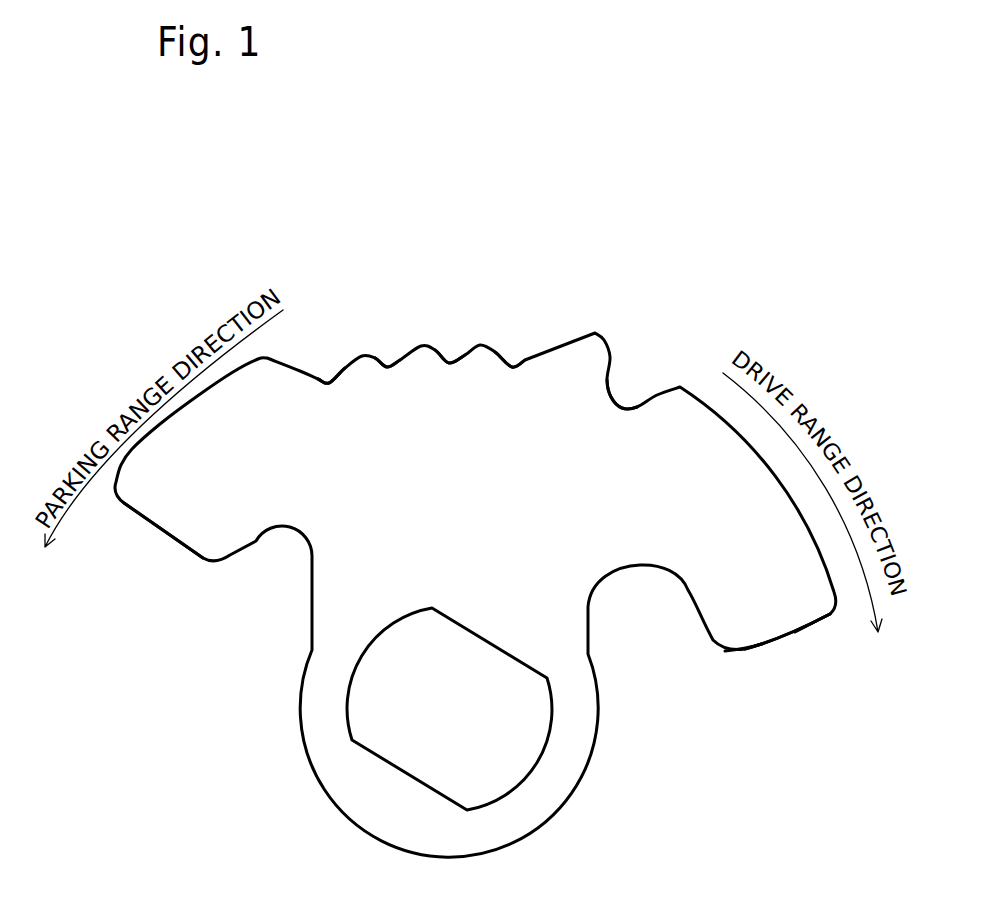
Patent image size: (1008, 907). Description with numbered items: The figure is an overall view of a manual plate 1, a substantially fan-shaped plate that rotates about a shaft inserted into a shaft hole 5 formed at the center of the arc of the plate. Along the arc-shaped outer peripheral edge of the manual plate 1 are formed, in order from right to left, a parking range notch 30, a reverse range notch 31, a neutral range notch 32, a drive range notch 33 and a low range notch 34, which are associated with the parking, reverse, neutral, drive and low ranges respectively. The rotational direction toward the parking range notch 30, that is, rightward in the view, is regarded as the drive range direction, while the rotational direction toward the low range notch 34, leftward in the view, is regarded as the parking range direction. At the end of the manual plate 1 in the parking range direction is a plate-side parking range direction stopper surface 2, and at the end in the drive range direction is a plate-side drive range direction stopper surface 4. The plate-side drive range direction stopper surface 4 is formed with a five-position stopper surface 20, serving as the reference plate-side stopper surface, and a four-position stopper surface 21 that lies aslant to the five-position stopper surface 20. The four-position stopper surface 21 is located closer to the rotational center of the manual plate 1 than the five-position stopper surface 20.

The manual plate 1 is at (715, 300).
The plate-side parking range direction stopper surface 2 is at (166, 550).
The plate-side drive range direction stopper surface 4 is at (781, 656).
The shaft hole 5 is at (520, 783).
The 5-position stopper surface 20 is at (812, 628).
The 4-position stopper surface 21 is at (742, 648).
The parking range notch 30 is at (617, 403).
The reverse range notch 31 is at (512, 367).
The neutral range notch 32 is at (449, 363).
The drive range notch 33 is at (387, 367).
The low range notch 34 is at (330, 380).